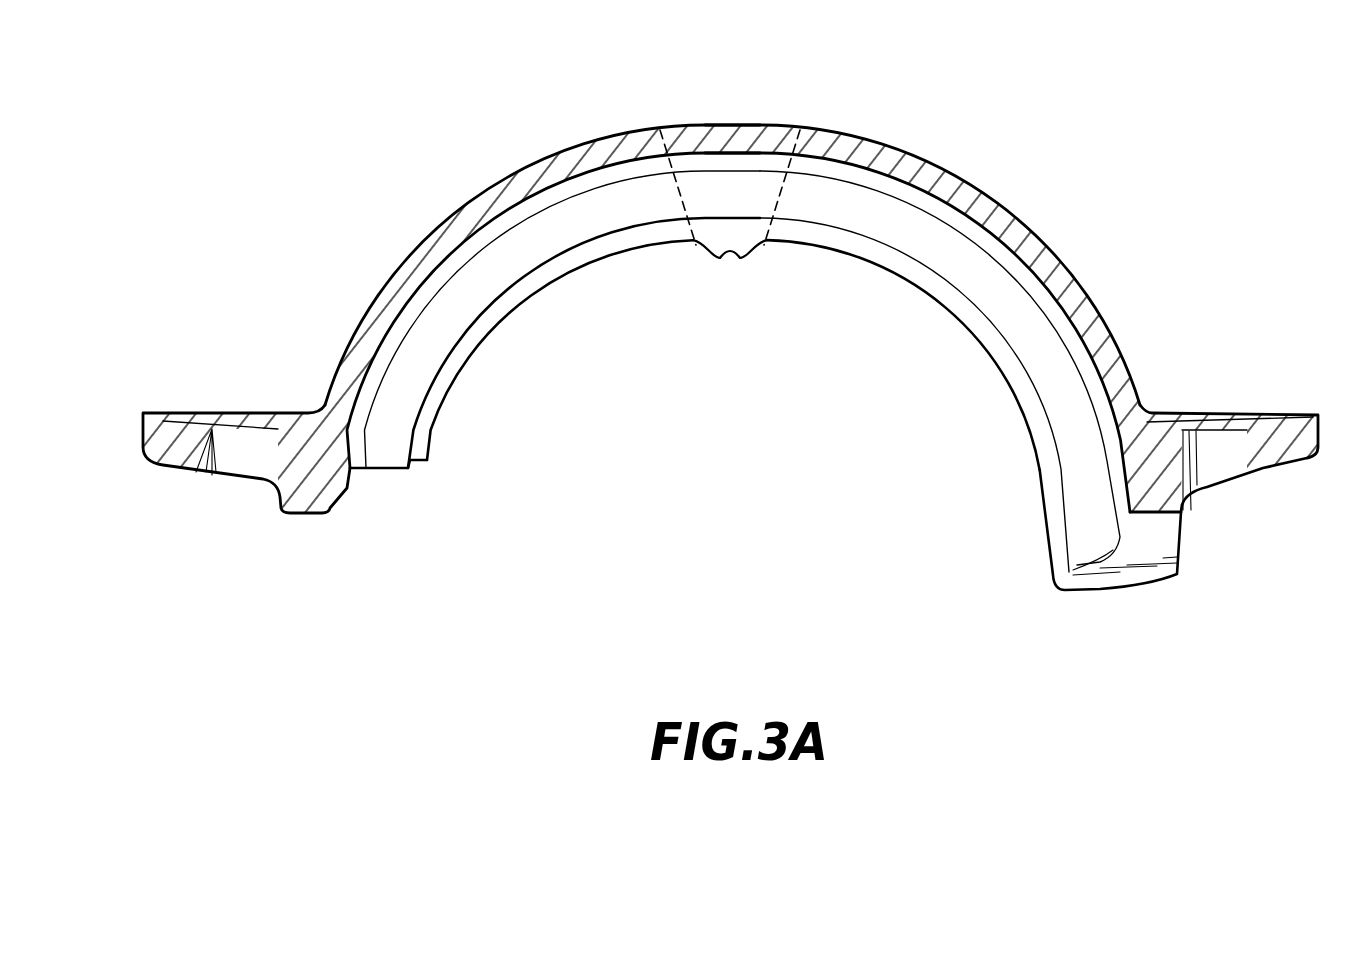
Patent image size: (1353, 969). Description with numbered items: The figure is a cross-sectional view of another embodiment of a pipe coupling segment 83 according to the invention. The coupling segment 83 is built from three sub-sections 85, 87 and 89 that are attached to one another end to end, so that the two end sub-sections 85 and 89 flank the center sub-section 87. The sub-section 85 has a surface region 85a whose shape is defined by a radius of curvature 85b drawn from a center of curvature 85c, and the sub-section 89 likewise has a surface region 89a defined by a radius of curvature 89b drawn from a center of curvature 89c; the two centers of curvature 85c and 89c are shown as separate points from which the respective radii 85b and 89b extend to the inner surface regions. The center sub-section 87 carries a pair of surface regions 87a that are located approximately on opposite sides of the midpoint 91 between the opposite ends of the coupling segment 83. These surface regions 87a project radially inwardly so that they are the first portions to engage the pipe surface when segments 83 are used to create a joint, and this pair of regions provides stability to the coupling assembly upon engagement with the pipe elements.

The coupling segment 83 is at (1000, 207).
The sub-section 85 is at (1104, 328).
The surface region 85a is at (1043, 497).
The radius of curvature 85b is at (760, 517).
The center of curvature 85c is at (752, 517).
The center sub-section 87 is at (752, 127).
The surface region 87a is at (718, 257).
The sub-section 89 is at (416, 252).
The surface region 89a is at (448, 418).
The radius of curvature 89b is at (705, 517).
The center of curvature 89c is at (705, 525).
The midpoint 91 is at (733, 259).